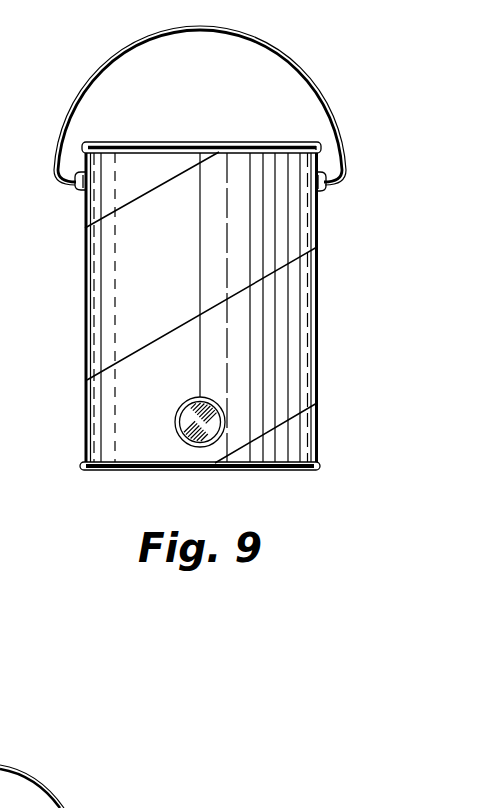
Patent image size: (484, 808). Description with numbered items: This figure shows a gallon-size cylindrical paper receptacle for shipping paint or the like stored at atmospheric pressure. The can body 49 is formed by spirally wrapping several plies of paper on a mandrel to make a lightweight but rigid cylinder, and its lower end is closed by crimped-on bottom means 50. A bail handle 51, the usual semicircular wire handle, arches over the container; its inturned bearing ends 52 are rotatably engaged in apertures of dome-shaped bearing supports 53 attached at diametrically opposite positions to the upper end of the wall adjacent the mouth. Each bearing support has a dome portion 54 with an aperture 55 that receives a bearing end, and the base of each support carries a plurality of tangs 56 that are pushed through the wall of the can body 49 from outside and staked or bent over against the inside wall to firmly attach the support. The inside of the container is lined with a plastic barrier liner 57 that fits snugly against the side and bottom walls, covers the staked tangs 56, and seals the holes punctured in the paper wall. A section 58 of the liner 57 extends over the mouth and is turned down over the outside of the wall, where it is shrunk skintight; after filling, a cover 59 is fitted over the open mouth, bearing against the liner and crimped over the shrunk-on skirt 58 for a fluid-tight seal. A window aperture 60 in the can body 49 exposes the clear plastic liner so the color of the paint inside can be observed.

The can body 49 is at (322, 317).
The bottom means 50 is at (207, 471).
The bail handle 51 is at (283, 54).
The bearing ends 52 is at (71, 185).
The bearing supports 53 is at (78, 193).
The dome portion 54 is at (327, 183).
The aperture 55 is at (332, 175).
The tangs 56 is at (312, 134).
The plastic barrier liner 57 is at (90, 310).
The section of the liner 58 is at (80, 140).
The cover 59 is at (195, 143).
The window aperture 60 is at (190, 403).